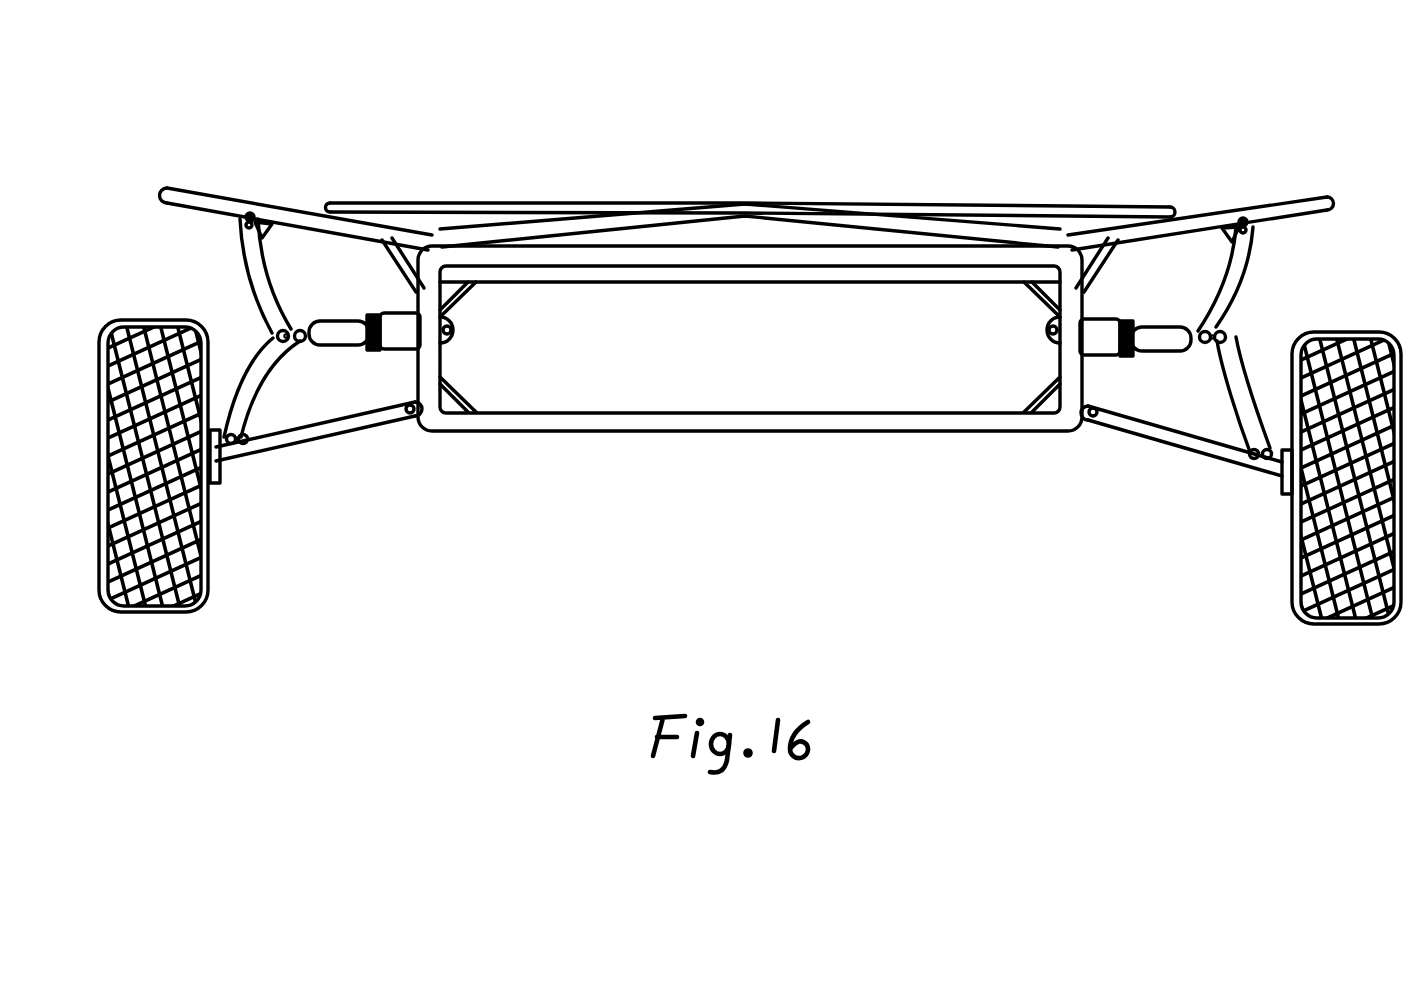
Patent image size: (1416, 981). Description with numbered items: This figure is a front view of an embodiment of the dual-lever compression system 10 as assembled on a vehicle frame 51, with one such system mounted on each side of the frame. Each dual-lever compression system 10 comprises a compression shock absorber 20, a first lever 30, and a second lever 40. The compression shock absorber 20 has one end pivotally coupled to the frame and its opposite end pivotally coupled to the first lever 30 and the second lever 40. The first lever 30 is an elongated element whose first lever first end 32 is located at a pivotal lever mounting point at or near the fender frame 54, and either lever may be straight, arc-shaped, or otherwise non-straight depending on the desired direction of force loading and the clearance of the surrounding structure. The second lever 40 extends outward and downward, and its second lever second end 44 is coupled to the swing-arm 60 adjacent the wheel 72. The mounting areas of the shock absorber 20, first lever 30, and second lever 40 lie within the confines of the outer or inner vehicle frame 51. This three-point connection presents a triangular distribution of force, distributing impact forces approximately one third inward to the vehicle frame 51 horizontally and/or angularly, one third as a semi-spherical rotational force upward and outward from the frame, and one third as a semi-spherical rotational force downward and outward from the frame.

The dual-lever compression system 10 is at (348, 464).
The compression shock absorber 20 is at (387, 348).
The first lever 30 is at (268, 268).
The first lever first end 32 is at (238, 231).
The second lever 40 is at (761, 317).
The second lever second end 44 is at (247, 423).
The vehicle frame 51 is at (718, 200).
The fender frame 54 is at (258, 194).
The swing-arm 60 is at (262, 462).
The wheel 72 is at (208, 576).